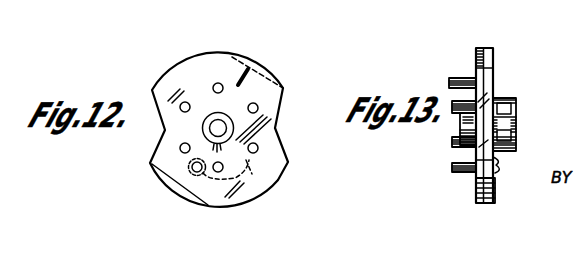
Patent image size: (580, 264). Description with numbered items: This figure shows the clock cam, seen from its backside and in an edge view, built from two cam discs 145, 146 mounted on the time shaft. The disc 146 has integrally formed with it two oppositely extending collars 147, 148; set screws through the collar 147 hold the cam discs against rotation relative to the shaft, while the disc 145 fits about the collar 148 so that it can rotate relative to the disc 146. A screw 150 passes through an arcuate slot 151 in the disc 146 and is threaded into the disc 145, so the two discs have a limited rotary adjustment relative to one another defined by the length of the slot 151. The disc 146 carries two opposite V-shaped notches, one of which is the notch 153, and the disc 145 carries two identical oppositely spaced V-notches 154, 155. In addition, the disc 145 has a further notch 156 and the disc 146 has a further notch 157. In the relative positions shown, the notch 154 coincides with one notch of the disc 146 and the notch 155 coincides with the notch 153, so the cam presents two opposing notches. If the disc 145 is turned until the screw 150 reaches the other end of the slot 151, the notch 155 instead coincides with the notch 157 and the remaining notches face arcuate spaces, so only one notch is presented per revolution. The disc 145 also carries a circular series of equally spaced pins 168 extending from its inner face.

In FIG. 12, the cam disc 145 is at (207, 63).
In FIG. 13, the cam disc 145 is at (478, 48).
In FIG. 12, the cam disc 146 is at (171, 192).
In FIG. 13, the cam disc 146 is at (493, 51).
In FIG. 13, the collar 147 is at (516, 123).
In FIG. 12, the collar 148 is at (203, 128).
In FIG. 13, the collar 148 is at (458, 130).
In FIG. 12, the screw 150 is at (194, 174).
In FIG. 13, the screw 150 is at (502, 165).
In FIG. 12, the arcuate slot 151 is at (277, 182).
In FIG. 13, the arcuate slot 151 is at (474, 178).
In FIG. 13, the V-shaped notch 153 is at (516, 129).
In FIG. 12, the V-notch 154 is at (153, 97).
In FIG. 12, the V-notch 155 is at (279, 114).
In FIG. 13, the V-notch 155 is at (482, 107).
In FIG. 12, the notch 156 is at (159, 173).
In FIG. 12, the notch 157 is at (264, 82).
In FIG. 13, the notch 157 is at (493, 69).
In FIG. 12, the pins 168 is at (186, 101).
In FIG. 13, the pins 168 is at (452, 103).